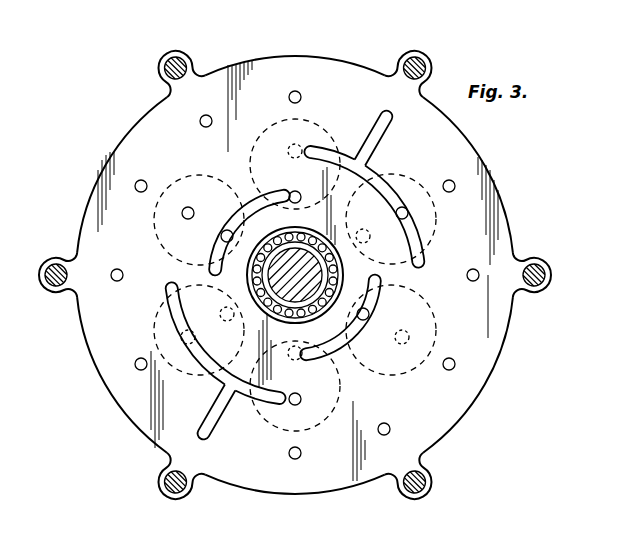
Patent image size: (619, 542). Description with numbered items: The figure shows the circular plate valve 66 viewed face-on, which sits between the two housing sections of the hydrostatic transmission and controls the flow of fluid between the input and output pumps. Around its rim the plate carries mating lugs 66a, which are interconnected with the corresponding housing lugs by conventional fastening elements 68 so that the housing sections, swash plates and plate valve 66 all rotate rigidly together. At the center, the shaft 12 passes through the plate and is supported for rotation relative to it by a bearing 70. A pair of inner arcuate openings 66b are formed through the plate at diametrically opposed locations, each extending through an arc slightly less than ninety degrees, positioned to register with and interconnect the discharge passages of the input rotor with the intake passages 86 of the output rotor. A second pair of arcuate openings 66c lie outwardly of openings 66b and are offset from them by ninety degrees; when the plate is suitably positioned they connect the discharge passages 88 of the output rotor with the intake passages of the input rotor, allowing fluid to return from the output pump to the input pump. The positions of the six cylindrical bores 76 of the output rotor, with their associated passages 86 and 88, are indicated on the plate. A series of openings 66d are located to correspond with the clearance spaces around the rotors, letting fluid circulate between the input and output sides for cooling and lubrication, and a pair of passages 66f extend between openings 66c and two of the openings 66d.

The shaft 12 is at (287, 263).
The plate valve 66 is at (462, 414).
The lugs 66a is at (188, 62).
The inner arcuate openings 66b is at (309, 343).
The arcuate openings 66c is at (421, 262).
The openings 66d is at (300, 94).
The passages 66f is at (381, 138).
The fastening elements 68 is at (164, 68).
The bearings 70 is at (341, 264).
The cylindrical bores 76 is at (275, 125).
The intake passage 86 is at (221, 236).
The discharge passage 88 is at (181, 215).